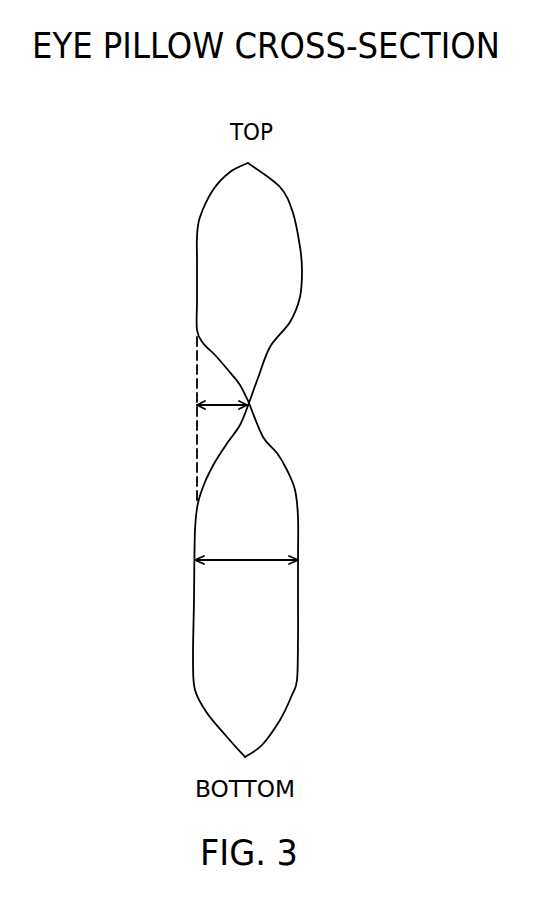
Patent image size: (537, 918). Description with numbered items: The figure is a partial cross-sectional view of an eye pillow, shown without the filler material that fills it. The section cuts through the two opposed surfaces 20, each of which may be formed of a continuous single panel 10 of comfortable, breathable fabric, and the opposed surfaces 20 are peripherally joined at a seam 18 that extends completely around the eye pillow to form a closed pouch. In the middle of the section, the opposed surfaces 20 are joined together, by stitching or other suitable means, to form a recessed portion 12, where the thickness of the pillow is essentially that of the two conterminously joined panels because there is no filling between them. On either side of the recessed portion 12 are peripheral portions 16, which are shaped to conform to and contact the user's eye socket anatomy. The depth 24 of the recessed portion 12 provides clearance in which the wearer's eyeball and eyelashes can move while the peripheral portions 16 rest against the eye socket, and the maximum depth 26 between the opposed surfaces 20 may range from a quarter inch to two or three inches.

The continuous single panel 10 is at (298, 524).
The recessed portion 12 is at (252, 398).
The peripheral portion 16 is at (288, 292).
The seam 18 is at (248, 163).
The surface 20 is at (203, 477).
The depth 24 is at (217, 404).
The maximum depth 26 is at (252, 562).